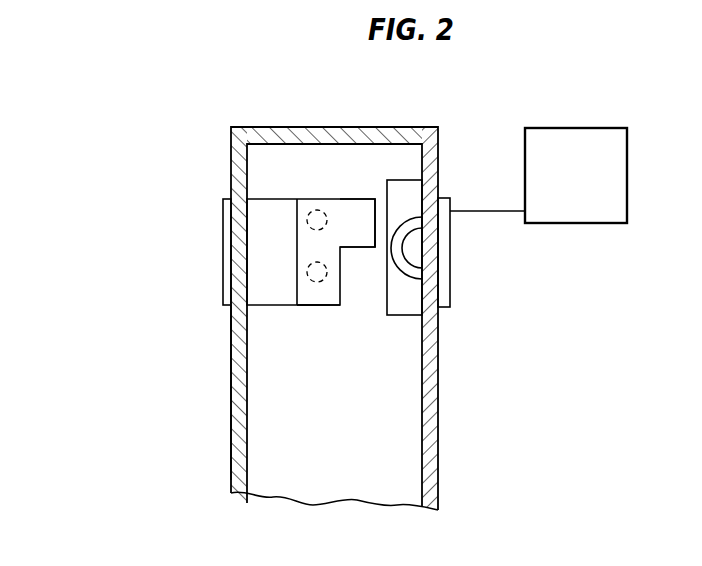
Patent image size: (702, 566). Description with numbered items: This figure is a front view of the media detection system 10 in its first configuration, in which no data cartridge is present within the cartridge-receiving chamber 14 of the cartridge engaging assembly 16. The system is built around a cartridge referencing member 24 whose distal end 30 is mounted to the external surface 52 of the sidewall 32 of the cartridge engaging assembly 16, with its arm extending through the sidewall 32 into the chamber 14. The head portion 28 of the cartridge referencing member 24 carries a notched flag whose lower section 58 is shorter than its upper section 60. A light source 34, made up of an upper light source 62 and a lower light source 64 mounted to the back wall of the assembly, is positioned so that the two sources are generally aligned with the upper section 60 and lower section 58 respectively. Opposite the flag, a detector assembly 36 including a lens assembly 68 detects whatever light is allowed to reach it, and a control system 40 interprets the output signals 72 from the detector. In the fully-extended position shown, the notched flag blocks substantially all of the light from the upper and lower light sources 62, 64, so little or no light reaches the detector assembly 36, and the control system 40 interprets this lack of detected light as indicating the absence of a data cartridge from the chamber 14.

The media detection system 10 is at (108, 150).
The cartridge-receiving chamber 14 is at (341, 465).
The cartridge engaging assembly 16 is at (441, 441).
The cartridge referencing member 24 is at (263, 196).
The head portion 28 is at (313, 312).
The distal end 30 is at (223, 255).
The sidewall 32 is at (230, 347).
The light source 34 is at (313, 200).
The detector assembly 36 is at (458, 250).
The control system 40 is at (578, 124).
The external surface 52 is at (230, 317).
The lower section 58 is at (327, 307).
The upper section 60 is at (363, 199).
The upper light source 62 is at (327, 223).
The lower light source 64 is at (307, 272).
The lens assembly 68 is at (412, 215).
The output signals 72 is at (503, 210).